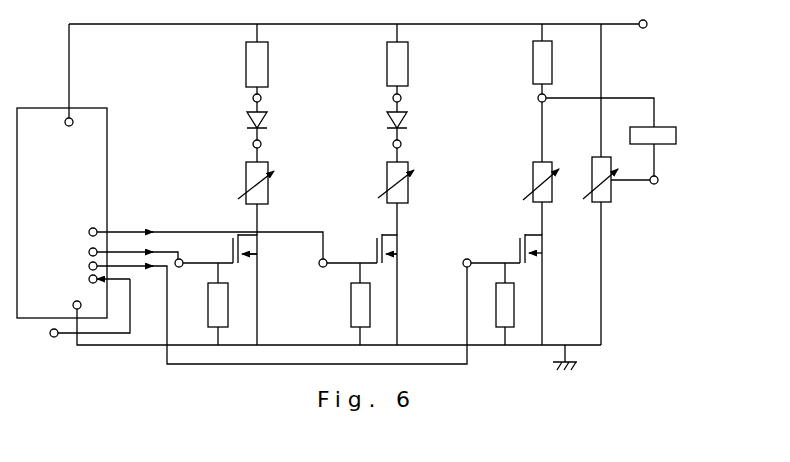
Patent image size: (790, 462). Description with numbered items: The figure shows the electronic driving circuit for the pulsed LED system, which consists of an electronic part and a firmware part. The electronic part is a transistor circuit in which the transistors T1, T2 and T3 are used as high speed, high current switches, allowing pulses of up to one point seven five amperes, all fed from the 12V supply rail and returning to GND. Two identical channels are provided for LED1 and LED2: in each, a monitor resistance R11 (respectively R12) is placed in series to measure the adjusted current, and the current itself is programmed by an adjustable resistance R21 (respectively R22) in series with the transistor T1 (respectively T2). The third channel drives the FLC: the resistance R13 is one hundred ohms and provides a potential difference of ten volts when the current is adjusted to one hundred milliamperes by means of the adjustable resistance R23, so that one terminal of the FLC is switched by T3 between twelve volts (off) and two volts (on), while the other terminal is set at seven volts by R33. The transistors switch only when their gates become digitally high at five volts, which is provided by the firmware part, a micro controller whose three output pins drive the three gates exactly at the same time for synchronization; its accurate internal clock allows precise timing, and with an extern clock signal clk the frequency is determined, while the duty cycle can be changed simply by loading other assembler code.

The supply voltage 12V is at (378, 22).
The extern clock signal clk is at (72, 309).
The monitor resistance R11 is at (233, 59).
The monitor resistance R12 is at (372, 59).
The resistance R13 is at (517, 59).
The first LED LED1 is at (218, 121).
The second LED LED2 is at (358, 121).
The adjustable resistance R21 is at (236, 191).
The adjustable resistance R22 is at (375, 191).
The adjustable resistance R23 is at (520, 168).
The adjustable resistance R33 is at (611, 184).
The transistor T1 is at (229, 286).
The transistor T2 is at (375, 286).
The transistor T3 is at (518, 286).
The ground GND is at (587, 357).